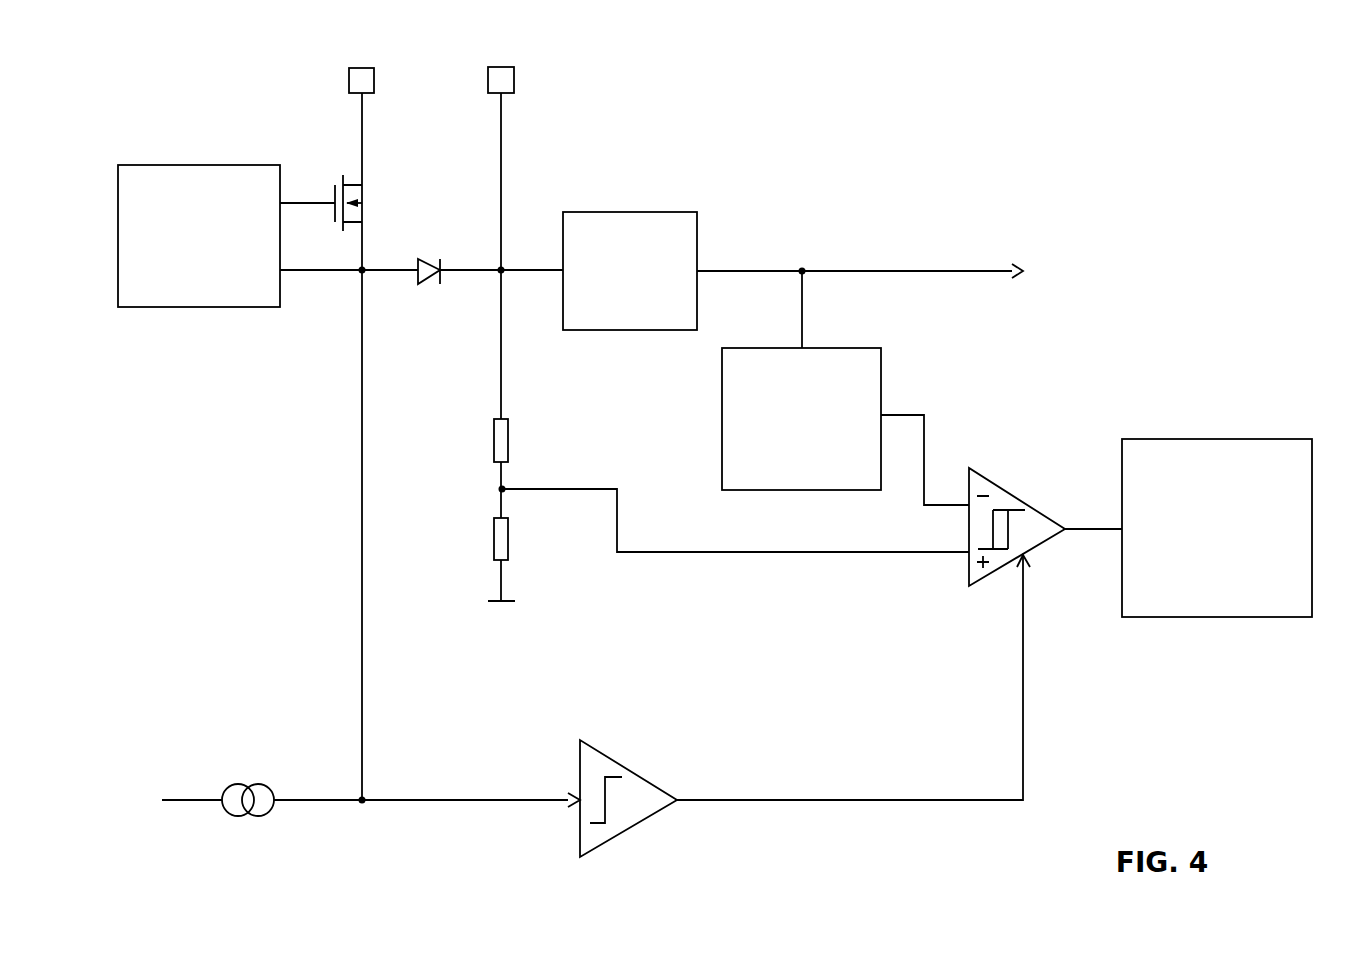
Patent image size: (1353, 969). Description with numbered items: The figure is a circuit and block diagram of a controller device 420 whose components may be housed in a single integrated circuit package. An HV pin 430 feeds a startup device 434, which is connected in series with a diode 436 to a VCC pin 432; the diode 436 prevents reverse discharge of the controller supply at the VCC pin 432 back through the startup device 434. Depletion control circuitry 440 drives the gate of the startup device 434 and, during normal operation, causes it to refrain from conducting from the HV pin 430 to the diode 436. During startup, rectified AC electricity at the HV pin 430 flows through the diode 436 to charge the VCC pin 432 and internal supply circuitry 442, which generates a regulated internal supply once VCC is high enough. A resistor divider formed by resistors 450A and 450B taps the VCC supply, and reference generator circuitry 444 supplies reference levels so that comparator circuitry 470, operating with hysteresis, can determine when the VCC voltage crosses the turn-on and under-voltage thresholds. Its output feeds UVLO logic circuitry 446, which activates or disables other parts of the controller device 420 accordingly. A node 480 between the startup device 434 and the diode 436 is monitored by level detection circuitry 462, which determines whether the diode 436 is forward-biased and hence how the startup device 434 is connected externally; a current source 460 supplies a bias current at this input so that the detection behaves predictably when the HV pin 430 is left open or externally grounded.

The controller device 420 is at (1102, 128).
The HV pin 430 is at (353, 95).
The VCC pin 432 is at (510, 94).
The startup device 434 is at (383, 193).
The diode 436 is at (427, 298).
The depletion control circuitry 440 is at (184, 281).
The internal supply circuitry 442 is at (615, 317).
The reference generator circuitry 444 is at (786, 464).
The UVLO logic circuitry 446 is at (1202, 599).
The resistor 450A is at (494, 435).
The resistor 450B is at (494, 537).
The current source 460 is at (233, 758).
The level detection circuitry 462 is at (630, 750).
The comparator circuitry 470 is at (958, 598).
The node 480 is at (318, 315).